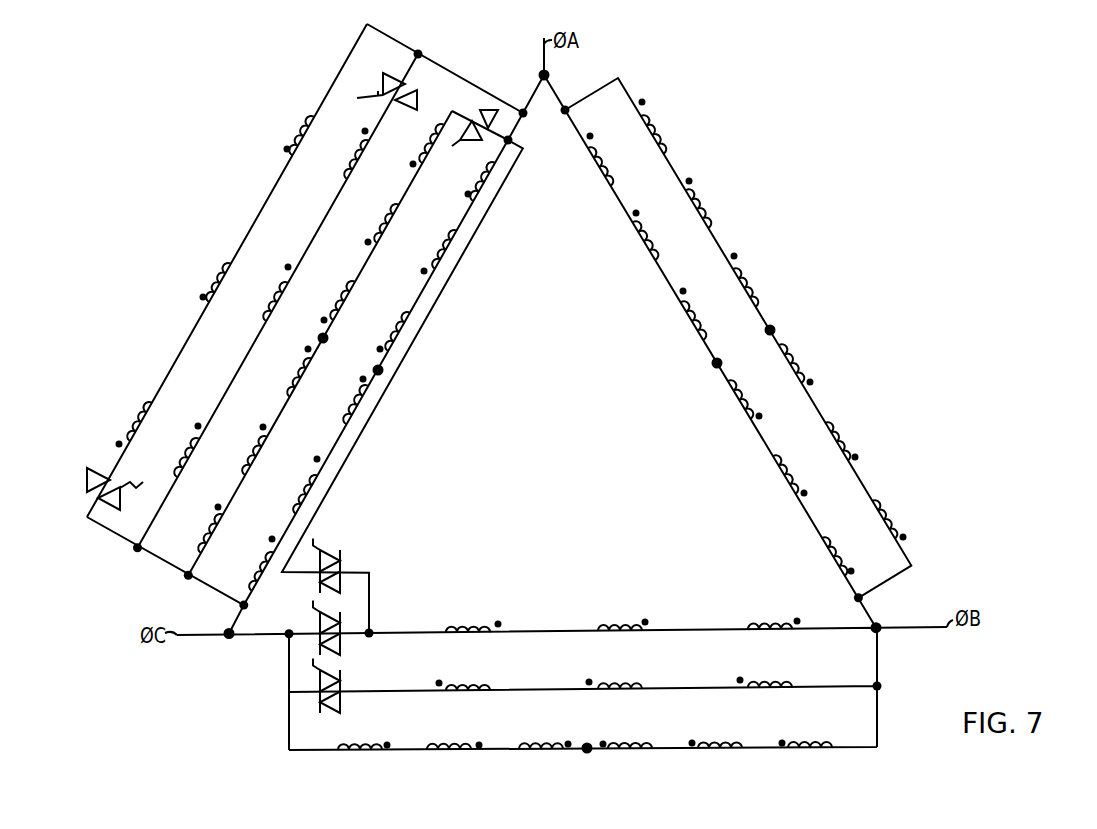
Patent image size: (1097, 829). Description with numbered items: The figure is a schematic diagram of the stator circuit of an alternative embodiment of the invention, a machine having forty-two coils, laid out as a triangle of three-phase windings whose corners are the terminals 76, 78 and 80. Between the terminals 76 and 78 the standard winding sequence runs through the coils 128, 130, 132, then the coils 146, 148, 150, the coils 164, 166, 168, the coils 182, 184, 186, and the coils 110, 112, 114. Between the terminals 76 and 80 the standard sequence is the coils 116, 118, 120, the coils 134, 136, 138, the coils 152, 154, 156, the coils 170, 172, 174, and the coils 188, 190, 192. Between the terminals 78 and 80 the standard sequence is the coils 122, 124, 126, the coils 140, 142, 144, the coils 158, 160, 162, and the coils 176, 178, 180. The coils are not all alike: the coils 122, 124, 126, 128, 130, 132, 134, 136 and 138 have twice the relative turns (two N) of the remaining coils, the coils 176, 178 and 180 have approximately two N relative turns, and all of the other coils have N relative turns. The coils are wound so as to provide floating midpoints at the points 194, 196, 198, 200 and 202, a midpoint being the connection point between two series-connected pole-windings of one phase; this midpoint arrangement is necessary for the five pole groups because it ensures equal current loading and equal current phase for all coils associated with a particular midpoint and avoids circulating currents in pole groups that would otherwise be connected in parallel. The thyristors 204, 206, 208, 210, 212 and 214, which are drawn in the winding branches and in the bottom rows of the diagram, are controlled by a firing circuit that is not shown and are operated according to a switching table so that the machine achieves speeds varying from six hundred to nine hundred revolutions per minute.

The terminal 76 is at (549, 75).
The terminal 78 is at (879, 631).
The terminal 80 is at (229, 638).
The coil 110 is at (745, 397).
The coil 112 is at (791, 472).
The coil 114 is at (840, 553).
The coil 116 is at (478, 178).
The coil 118 is at (446, 232).
The coil 120 is at (393, 329).
The coil 122 is at (355, 160).
The coil 124 is at (288, 276).
The coil 126 is at (195, 430).
The coil 128 is at (784, 627).
The coil 130 is at (622, 628).
The coil 132 is at (478, 630).
The coil 134 is at (139, 421).
The coil 136 is at (214, 280).
The coil 138 is at (297, 133).
The coil 140 is at (628, 752).
The coil 142 is at (718, 752).
The coil 144 is at (816, 751).
The coil 146 is at (658, 131).
The coil 148 is at (703, 206).
The coil 150 is at (750, 284).
The coil 152 is at (295, 375).
The coil 154 is at (258, 452).
The coil 156 is at (209, 517).
The coil 158 is at (534, 752).
The coil 160 is at (452, 752).
The coil 162 is at (358, 752).
The coil 164 is at (889, 516).
The coil 166 is at (843, 438).
The coil 168 is at (796, 361).
The coil 170 is at (338, 297).
The coil 172 is at (382, 221).
The coil 174 is at (431, 144).
The coil 176 is at (480, 688).
The coil 178 is at (626, 687).
The coil 180 is at (776, 686).
The coil 182 is at (605, 165).
The coil 184 is at (650, 238).
The coil 186 is at (698, 317).
The coil 188 is at (351, 402).
The coil 190 is at (312, 467).
The coil 192 is at (267, 542).
The floating midpoint 194 is at (717, 363).
The floating midpoint 196 is at (773, 331).
The floating midpoint 198 is at (383, 370).
The floating midpoint 200 is at (328, 338).
The floating midpoint 202 is at (587, 748).
The thyristor 204 is at (87, 491).
The thyristor 206 is at (342, 551).
The thyristor 208 is at (383, 76).
The thyristor 210 is at (313, 612).
The thyristor 212 is at (486, 110).
The thyristor 214 is at (341, 673).